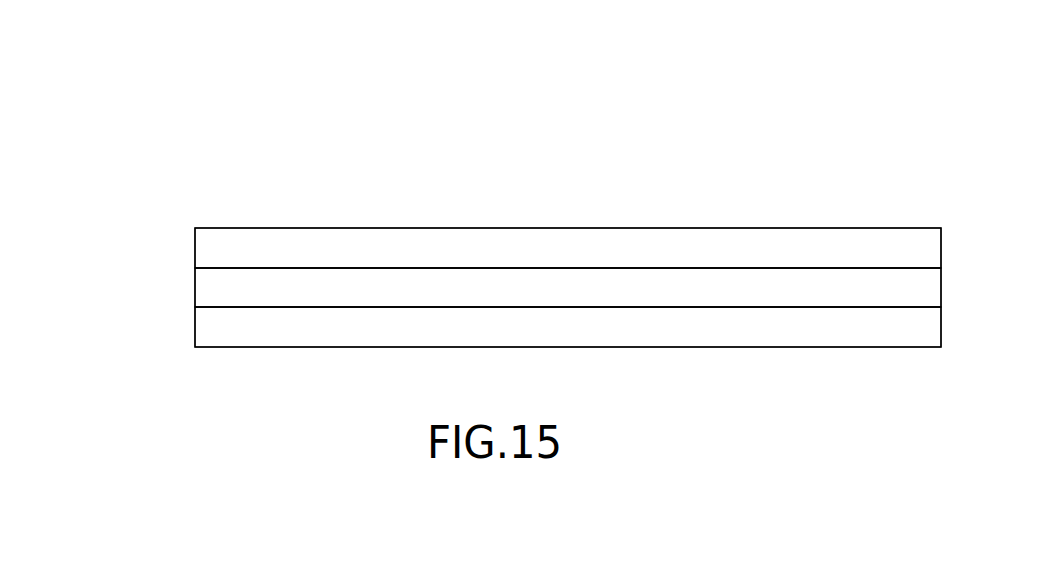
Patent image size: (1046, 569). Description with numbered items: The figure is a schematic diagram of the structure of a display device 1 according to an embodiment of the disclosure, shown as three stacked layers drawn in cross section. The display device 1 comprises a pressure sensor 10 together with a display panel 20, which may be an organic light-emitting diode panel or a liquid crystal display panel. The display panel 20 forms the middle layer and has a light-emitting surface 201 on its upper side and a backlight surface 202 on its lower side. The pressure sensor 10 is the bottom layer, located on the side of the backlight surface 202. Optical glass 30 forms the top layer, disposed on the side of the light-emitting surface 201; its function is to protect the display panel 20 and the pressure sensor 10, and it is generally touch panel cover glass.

The display device 1 is at (577, 33).
The pressure sensor 10 is at (195, 327).
The display panel 20 is at (195, 288).
The optical glass 30 is at (195, 248).
The light-emitting surface 201 is at (363, 268).
The backlight surface 202 is at (497, 307).